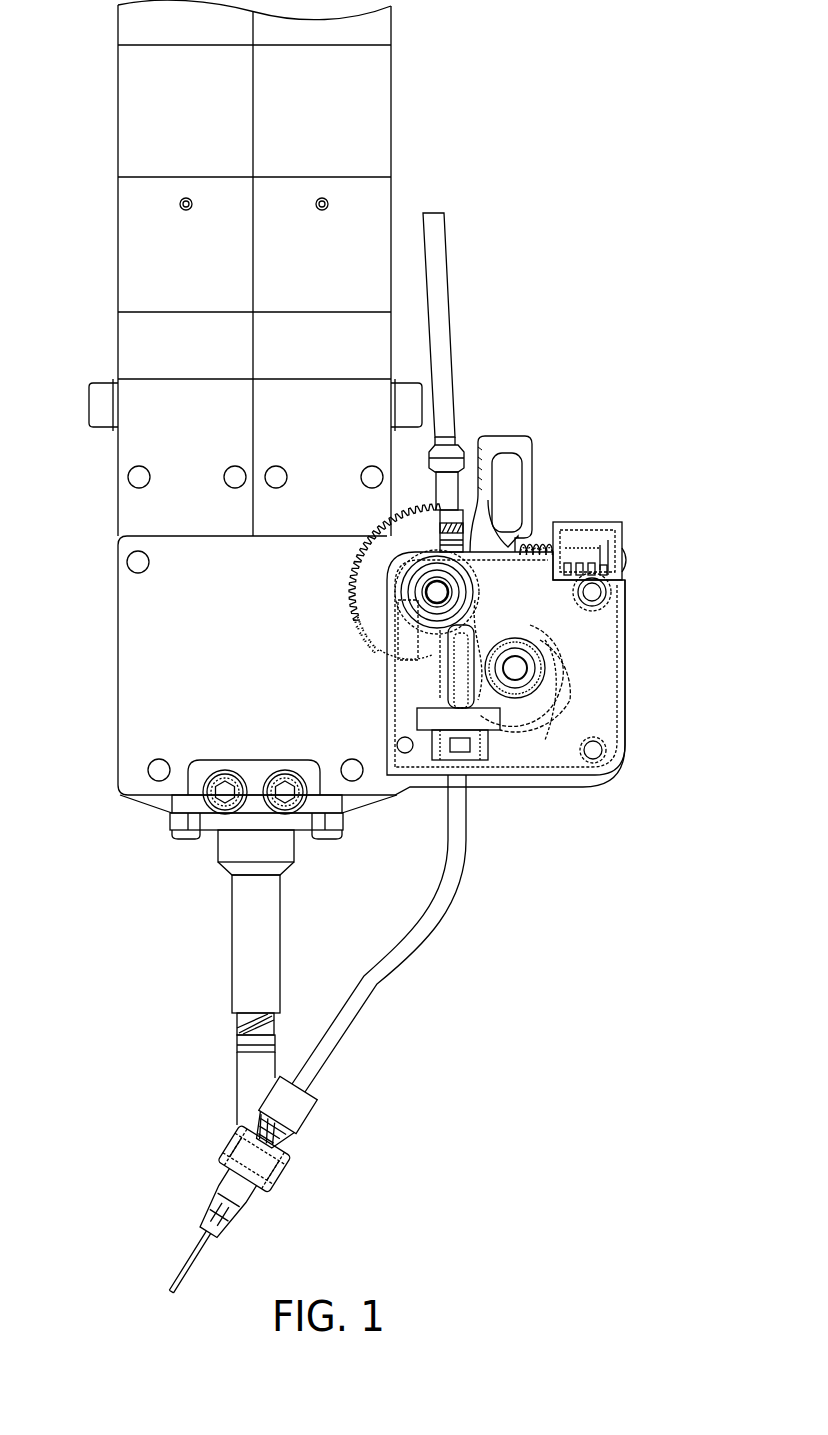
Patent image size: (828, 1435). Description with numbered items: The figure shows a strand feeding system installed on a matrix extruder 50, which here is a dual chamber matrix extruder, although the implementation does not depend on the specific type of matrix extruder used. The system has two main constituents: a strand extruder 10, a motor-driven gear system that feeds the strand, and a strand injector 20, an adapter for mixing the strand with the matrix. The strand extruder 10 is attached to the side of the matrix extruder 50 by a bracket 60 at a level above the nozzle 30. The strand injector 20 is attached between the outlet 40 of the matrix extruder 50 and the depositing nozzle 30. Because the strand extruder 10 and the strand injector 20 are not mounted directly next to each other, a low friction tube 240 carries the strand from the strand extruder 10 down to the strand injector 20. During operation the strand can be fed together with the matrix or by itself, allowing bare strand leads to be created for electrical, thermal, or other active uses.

The strand extruder 10 is at (643, 622).
The strand injector 20 is at (320, 1120).
The nozzle 30 is at (198, 1217).
The outlet 40 is at (283, 933).
The matrix extruder 50 is at (110, 522).
The bracket 60 is at (110, 745).
The low friction tube 240 is at (460, 850).